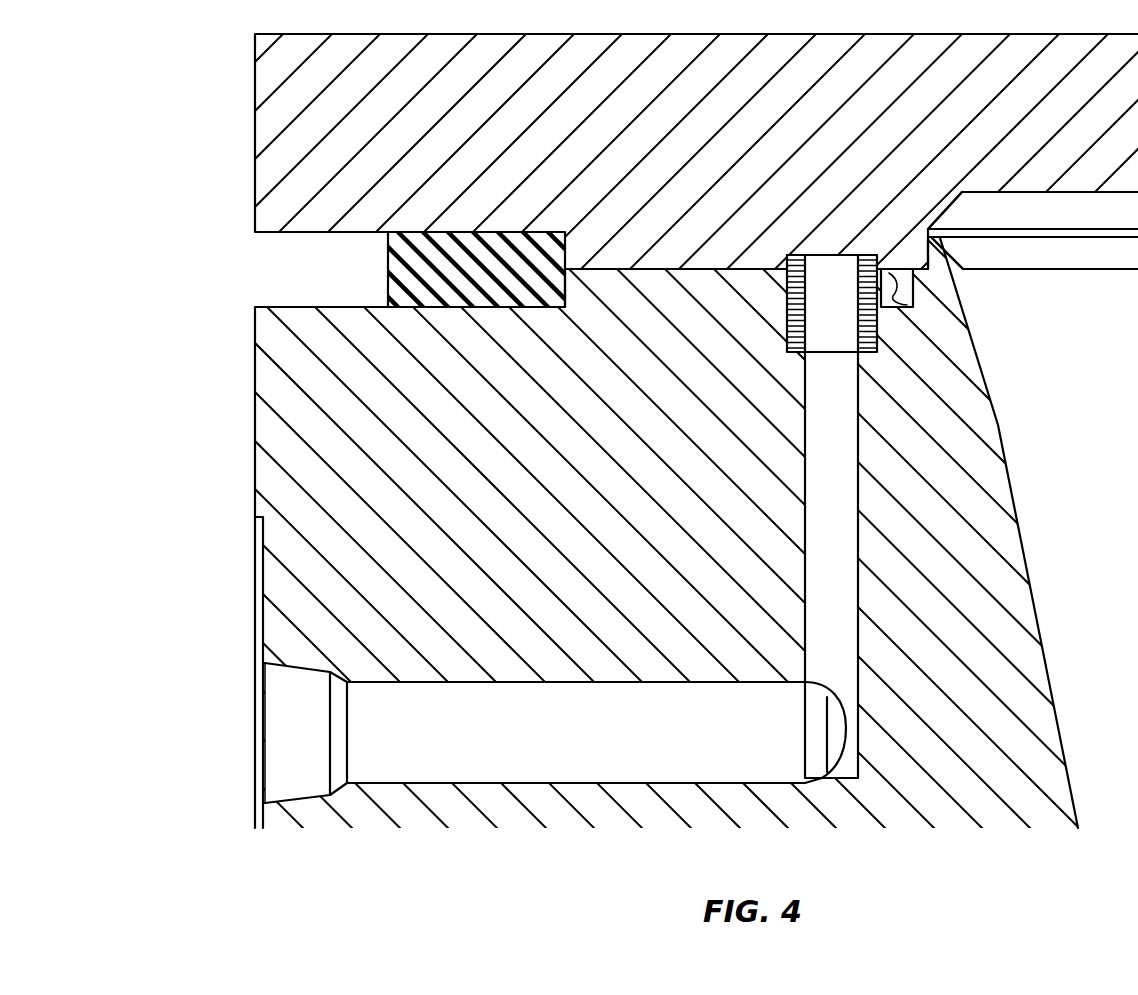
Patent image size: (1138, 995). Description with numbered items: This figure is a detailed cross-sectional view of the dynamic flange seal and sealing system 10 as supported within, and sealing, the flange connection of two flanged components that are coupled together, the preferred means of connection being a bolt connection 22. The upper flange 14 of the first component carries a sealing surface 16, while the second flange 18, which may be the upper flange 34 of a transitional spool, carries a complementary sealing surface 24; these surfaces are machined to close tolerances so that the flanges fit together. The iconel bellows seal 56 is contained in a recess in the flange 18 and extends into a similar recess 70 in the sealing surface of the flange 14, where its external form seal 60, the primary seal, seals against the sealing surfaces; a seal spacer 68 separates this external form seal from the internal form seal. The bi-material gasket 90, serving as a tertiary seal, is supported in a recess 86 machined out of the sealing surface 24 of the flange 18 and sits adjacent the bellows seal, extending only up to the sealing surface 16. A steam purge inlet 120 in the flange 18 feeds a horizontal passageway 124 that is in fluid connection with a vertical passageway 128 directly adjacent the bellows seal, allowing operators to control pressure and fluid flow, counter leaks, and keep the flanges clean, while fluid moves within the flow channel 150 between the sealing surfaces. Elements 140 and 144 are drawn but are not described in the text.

The dynamic flange seal and sealing system 10 is at (916, 356).
The flange 14 is at (254, 145).
The sealing surface 16 is at (652, 269).
The second flange 18 is at (254, 374).
The bolt connection 22 is at (404, 276).
The sealing surface 24 is at (692, 268).
The upper flange 34 is at (254, 470).
The iconel bellows seal 56 is at (809, 236).
The external form seal 60 is at (787, 318).
The seal spacer 68 is at (838, 342).
The recess 70 is at (818, 262).
The recess 86 is at (886, 292).
The bi-material gasket 90 is at (932, 312).
The steam purge inlet 120 is at (236, 738).
The horizontal passageway 124 is at (424, 694).
The vertical passageway 128 is at (848, 490).
The chamfer 140 is at (950, 192).
The wedge / shim 144 is at (960, 250).
The flow channel 150 is at (970, 232).